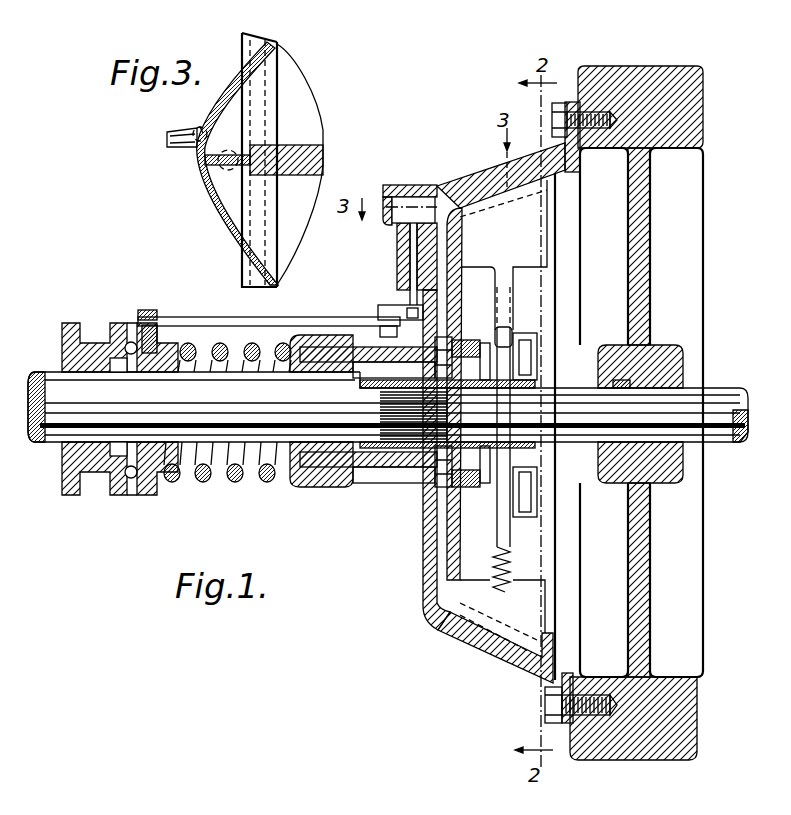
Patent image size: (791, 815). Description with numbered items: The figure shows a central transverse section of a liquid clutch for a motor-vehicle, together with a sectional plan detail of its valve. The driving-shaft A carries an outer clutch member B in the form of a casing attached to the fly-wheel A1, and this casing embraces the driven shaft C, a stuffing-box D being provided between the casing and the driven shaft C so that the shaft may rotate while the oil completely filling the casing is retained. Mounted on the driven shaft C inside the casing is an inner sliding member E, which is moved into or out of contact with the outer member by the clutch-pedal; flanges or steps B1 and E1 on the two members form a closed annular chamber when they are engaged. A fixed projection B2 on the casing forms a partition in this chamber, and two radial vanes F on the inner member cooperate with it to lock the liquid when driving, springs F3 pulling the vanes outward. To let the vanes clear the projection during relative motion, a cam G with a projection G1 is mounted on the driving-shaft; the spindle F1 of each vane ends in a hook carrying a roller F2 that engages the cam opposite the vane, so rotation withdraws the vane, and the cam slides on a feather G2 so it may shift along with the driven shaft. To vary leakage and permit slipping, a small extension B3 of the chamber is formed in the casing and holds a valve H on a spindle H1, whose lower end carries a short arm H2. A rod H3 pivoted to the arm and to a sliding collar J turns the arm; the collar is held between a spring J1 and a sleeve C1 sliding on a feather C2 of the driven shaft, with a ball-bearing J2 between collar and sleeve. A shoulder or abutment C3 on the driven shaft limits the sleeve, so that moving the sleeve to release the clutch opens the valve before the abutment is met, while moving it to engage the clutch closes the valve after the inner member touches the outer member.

In FIG. 1, the driving-shaft A is at (690, 420).
In FIG. 1, the fly-wheel A1 is at (660, 697).
In FIG. 1, the outer clutch member B is at (467, 652).
In FIG. 1, the flange or step B1 is at (440, 625).
In FIG. 3, the fixed projection B2 is at (303, 163).
In FIG. 1, the fixed projection B2 is at (473, 183).
In FIG. 3, the extension of the annular chamber B3 is at (213, 210).
In FIG. 1, the extension of the annular chamber B3 is at (387, 187).
In FIG. 1, the driven shaft C is at (78, 410).
In FIG. 1, the sleeve C1 is at (66, 323).
In FIG. 1, the feather C2 is at (96, 343).
In FIG. 1, the shoulder or abutment C3 is at (181, 343).
In FIG. 1, the stuffing-box D is at (350, 488).
In FIG. 1, the inner sliding member E is at (492, 545).
In FIG. 1, the flange or step E1 is at (550, 157).
In FIG. 1, the radial vane F is at (470, 227).
In FIG. 1, the spindle F1 is at (497, 520).
In FIG. 1, the roller F2 is at (523, 357).
In FIG. 1, the spring F3 is at (447, 582).
In FIG. 1, the cam G is at (537, 373).
In FIG. 1, the projection of the cam G1 is at (518, 462).
In FIG. 1, the feather G2 is at (622, 383).
In FIG. 3, the valve H is at (225, 162).
In FIG. 1, the valve H is at (399, 210).
In FIG. 3, the spindle H1 is at (212, 147).
In FIG. 1, the spindle H1 is at (410, 257).
In FIG. 3, the arm H2 is at (199, 131).
In FIG. 1, the arm H2 is at (382, 307).
In FIG. 3, the rod H3 is at (167, 134).
In FIG. 1, the rod H3 is at (307, 318).
In FIG. 1, the sliding collar J is at (152, 290).
In FIG. 1, the spring J1 is at (250, 343).
In FIG. 1, the ball-bearing J2 is at (131, 341).